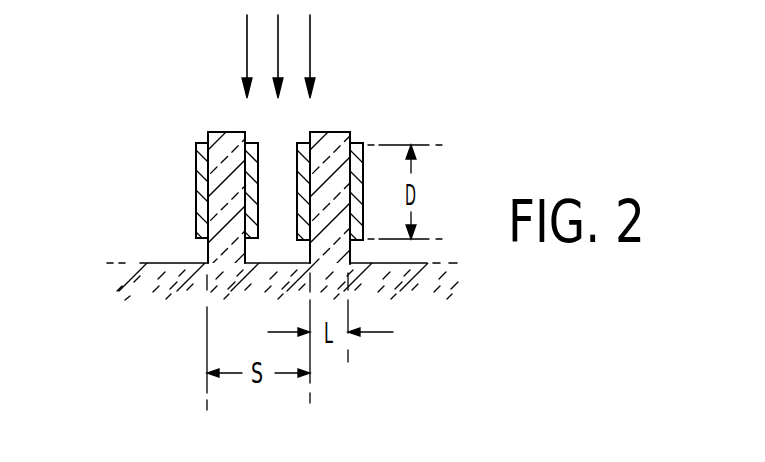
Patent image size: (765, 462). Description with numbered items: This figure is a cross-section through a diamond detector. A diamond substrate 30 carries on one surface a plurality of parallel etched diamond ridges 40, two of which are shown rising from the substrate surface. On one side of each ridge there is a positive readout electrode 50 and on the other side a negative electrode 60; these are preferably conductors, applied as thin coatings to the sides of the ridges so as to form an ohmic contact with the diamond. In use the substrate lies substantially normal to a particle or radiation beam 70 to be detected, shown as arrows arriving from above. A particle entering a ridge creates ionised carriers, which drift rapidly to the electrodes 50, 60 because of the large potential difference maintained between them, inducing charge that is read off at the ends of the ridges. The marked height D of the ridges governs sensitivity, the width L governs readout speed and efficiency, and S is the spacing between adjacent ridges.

The diamond substrate 30 is at (184, 275).
The etched diamond ridge 40 is at (216, 132).
The positive readout electrode 50 is at (196, 165).
The negative electrode 60 is at (262, 153).
The particle or radiation beam 70 is at (310, 53).